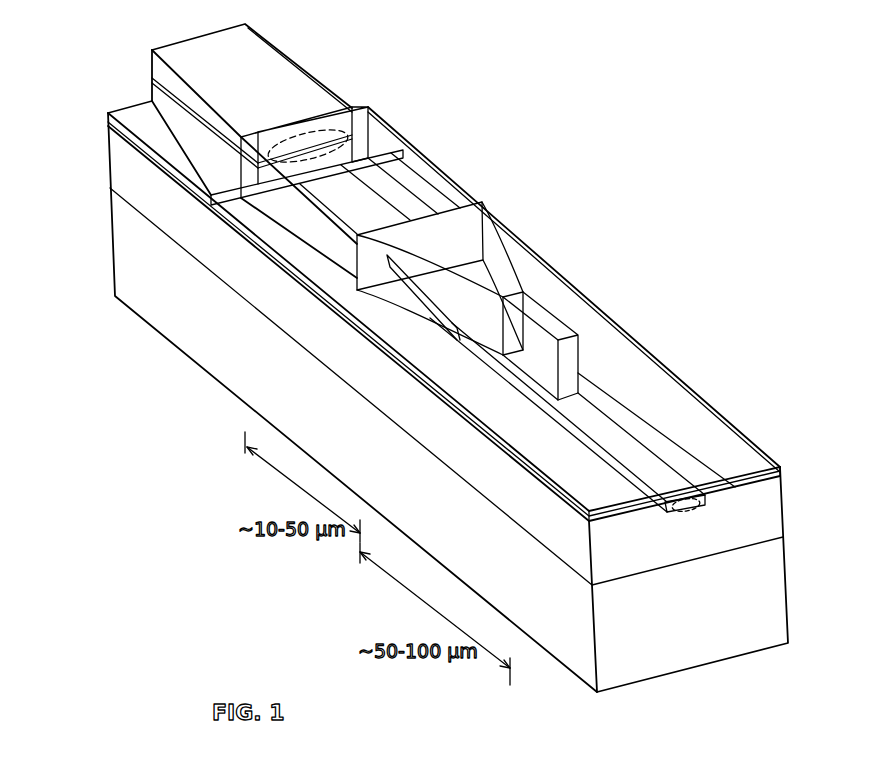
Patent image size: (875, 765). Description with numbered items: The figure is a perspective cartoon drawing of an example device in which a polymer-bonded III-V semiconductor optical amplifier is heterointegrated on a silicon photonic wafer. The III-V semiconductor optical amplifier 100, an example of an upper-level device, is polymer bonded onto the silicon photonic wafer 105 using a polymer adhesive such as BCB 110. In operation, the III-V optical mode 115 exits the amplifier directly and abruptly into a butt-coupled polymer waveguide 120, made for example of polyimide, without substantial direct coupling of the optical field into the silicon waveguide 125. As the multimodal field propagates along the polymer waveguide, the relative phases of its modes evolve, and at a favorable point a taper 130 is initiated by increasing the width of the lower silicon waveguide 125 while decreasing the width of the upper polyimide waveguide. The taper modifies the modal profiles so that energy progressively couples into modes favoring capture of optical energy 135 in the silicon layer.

The III-V semiconductor optical amplifier 100 is at (298, 88).
The silicon photonic wafer 105 is at (137, 303).
The BCB 110 is at (152, 157).
The III-V optical mode 115 is at (352, 138).
The polymer waveguide 120 is at (470, 197).
The silicon waveguide 125 is at (621, 437).
The taper 130 is at (393, 302).
The optical energy 135 is at (700, 510).